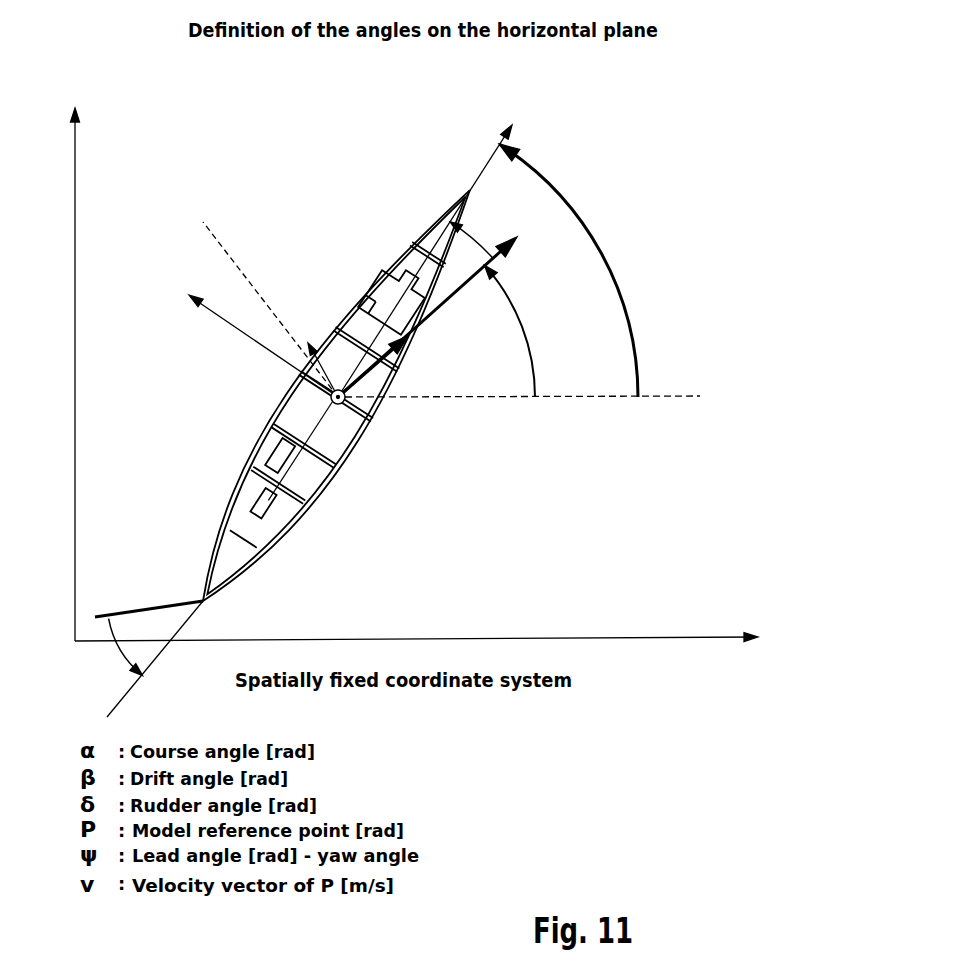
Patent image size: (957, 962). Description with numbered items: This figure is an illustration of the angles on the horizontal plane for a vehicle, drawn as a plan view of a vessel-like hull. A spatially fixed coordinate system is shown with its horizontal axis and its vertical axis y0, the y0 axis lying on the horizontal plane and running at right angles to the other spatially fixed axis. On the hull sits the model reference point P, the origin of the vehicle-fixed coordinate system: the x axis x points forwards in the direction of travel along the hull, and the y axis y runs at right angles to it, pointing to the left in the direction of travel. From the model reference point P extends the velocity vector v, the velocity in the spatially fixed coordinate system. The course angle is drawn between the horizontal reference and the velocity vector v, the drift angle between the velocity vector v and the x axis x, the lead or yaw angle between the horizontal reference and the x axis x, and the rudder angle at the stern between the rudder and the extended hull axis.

The model reference point P is at (301, 378).
The velocity vector v is at (437, 317).
The x axis x is at (436, 255).
The y axis y is at (257, 346).
The y0 axis y0 is at (91, 371).